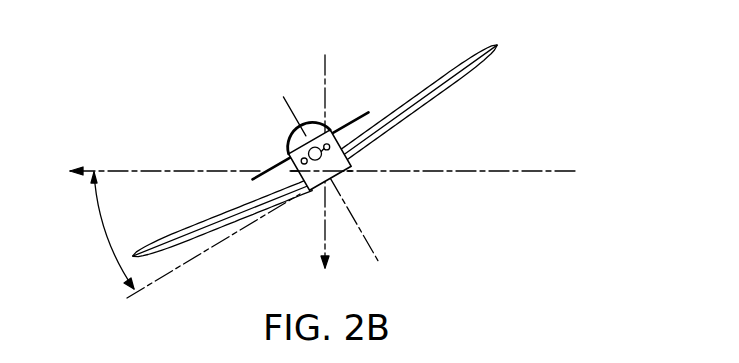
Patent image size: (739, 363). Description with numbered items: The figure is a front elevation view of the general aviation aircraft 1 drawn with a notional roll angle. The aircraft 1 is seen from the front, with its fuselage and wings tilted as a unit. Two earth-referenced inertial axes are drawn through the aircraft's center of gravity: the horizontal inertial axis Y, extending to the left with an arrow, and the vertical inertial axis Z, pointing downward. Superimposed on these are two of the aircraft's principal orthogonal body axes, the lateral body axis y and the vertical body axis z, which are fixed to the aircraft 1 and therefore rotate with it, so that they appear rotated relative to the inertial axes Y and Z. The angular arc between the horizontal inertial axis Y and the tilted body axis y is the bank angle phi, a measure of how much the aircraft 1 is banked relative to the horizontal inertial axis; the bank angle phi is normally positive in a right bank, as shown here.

The general aviation aircraft 1 is at (315, 137).
The horizontal inertial axis Y is at (313, 174).
The vertical inertial axis Z is at (325, 174).
The aircraft body axis y is at (206, 255).
The aircraft body axis z is at (334, 188).
The bank angle phi is at (108, 230).